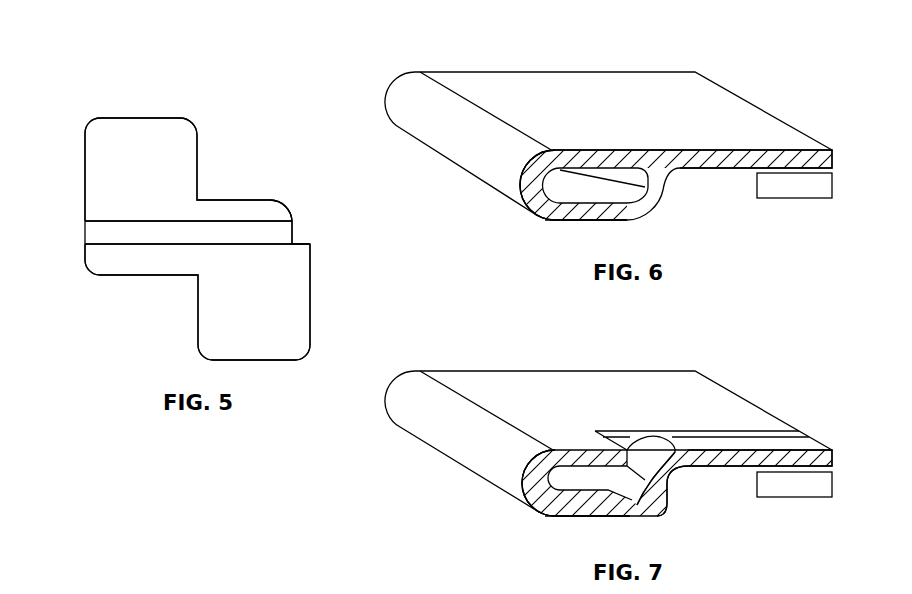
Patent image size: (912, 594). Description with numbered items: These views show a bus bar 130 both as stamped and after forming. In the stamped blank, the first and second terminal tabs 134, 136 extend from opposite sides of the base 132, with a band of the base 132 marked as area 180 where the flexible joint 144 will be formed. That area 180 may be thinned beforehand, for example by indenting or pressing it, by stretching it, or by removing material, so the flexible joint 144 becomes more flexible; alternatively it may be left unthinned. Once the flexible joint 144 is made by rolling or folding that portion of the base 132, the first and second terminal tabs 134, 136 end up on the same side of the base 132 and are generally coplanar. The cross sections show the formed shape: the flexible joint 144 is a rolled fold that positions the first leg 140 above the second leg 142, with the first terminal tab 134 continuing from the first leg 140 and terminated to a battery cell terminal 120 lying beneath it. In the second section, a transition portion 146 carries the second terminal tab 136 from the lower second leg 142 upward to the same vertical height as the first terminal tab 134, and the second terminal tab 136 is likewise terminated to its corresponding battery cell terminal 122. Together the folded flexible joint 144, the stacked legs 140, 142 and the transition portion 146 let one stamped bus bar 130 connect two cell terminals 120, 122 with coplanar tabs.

In FIG. 6, the battery cell terminal 120 is at (793, 192).
In FIG. 7, the battery cell terminal 122 is at (793, 490).
In FIG. 5, the bus bar 130 is at (245, 160).
In FIG. 6, the bus bar 130 is at (389, 78).
In FIG. 7, the bus bar 130 is at (389, 378).
In FIG. 5, the base 132 is at (300, 206).
In FIG. 5, the first terminal tab 134 is at (180, 136).
In FIG. 6, the first terminal tab 134 is at (777, 158).
In FIG. 7, the first terminal tab 134 is at (713, 400).
In FIG. 5, the second terminal tab 136 is at (292, 312).
In FIG. 7, the second terminal tab 136 is at (760, 458).
In FIG. 6, the first leg 140 is at (588, 152).
In FIG. 7, the first leg 140 is at (580, 450).
In FIG. 6, the second leg 142 is at (572, 220).
In FIG. 7, the second leg 142 is at (572, 518).
In FIG. 5, the flexible joint 144 is at (278, 233).
In FIG. 6, the flexible joint 144 is at (532, 185).
In FIG. 7, the flexible joint 144 is at (532, 485).
In FIG. 7, the transition portion 146 is at (650, 497).
In FIG. 5, the area 180 is at (98, 233).